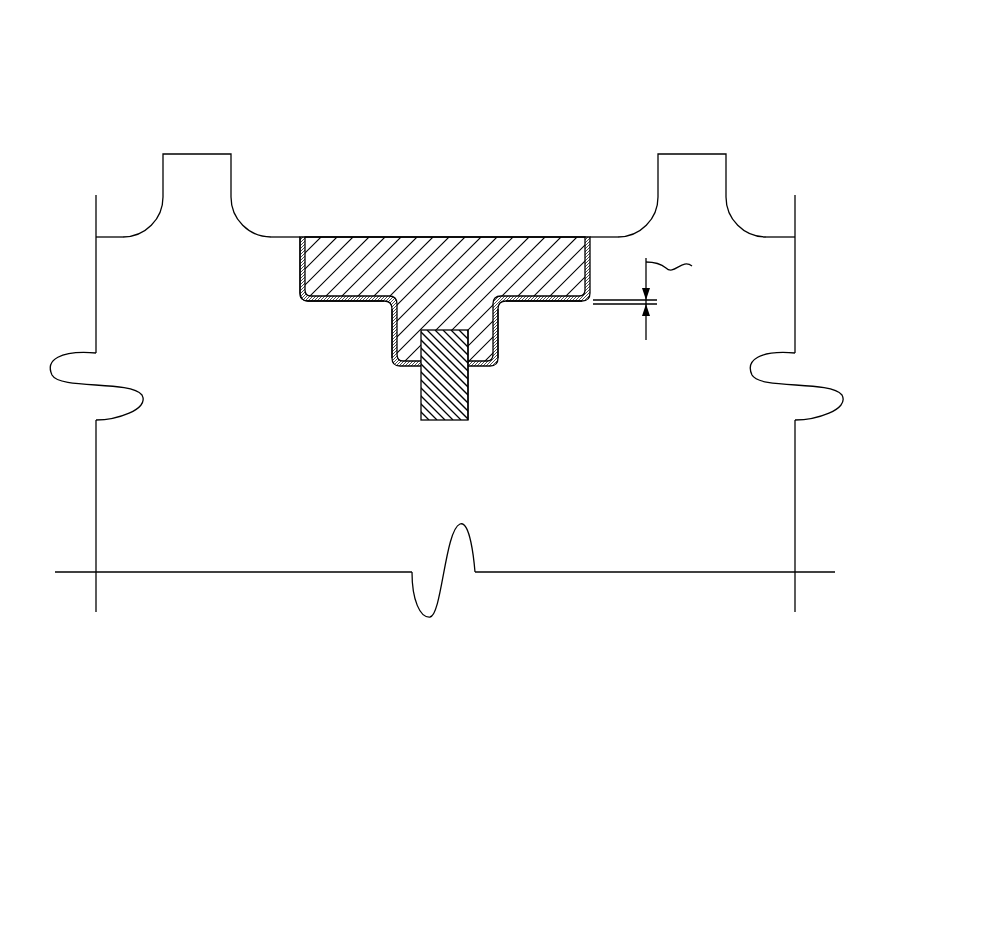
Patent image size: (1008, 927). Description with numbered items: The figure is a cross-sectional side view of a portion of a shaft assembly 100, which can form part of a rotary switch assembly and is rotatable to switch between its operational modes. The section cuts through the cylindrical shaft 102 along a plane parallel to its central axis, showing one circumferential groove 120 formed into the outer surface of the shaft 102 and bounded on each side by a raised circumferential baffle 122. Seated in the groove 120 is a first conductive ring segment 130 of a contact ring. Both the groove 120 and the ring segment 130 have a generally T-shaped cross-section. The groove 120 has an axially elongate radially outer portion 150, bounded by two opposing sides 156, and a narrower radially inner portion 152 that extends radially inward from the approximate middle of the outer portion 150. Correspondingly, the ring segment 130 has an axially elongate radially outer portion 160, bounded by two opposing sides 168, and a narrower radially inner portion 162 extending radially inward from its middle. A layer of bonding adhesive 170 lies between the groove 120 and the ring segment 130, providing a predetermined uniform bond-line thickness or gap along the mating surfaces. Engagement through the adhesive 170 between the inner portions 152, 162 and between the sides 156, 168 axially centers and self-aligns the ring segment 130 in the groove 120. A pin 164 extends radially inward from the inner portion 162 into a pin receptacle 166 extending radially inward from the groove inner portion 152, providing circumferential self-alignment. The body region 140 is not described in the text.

The shaft assembly 100 is at (558, 86).
The cylindrical shaft 102 is at (621, 570).
The circumferential groove 120 is at (339, 237).
The circumferential baffle 122 is at (217, 154).
The first conductive ring segment 130 is at (413, 231).
The body 140 is at (759, 472).
The radially outer portion of groove 150 is at (338, 297).
The radially inner portion of groove 152 is at (392, 347).
The opposing sides of radially outer groove portion 156 is at (300, 246).
The radially outer portion of ring segment 160 is at (560, 296).
The radially inner portion of ring segment 162 is at (488, 330).
The pin 164 is at (437, 407).
The pin receptacle 166 is at (468, 383).
The opposing sides of radially outer ring segment portion 168 is at (300, 273).
The bonding adhesive 170 is at (302, 302).